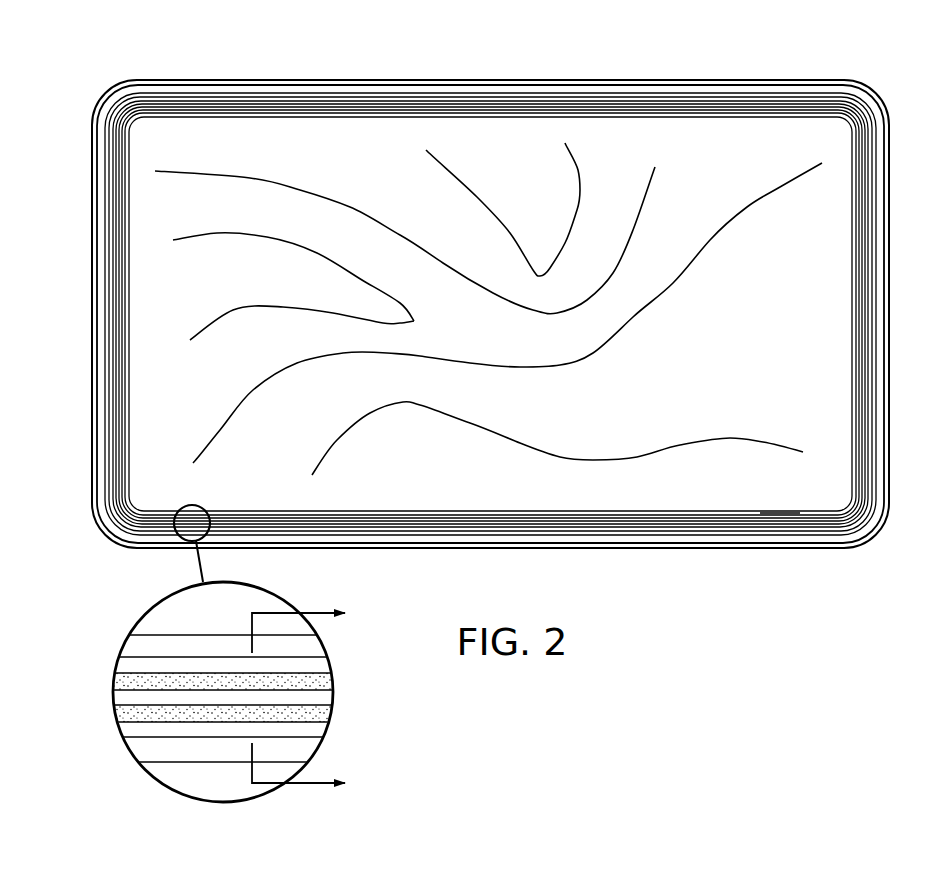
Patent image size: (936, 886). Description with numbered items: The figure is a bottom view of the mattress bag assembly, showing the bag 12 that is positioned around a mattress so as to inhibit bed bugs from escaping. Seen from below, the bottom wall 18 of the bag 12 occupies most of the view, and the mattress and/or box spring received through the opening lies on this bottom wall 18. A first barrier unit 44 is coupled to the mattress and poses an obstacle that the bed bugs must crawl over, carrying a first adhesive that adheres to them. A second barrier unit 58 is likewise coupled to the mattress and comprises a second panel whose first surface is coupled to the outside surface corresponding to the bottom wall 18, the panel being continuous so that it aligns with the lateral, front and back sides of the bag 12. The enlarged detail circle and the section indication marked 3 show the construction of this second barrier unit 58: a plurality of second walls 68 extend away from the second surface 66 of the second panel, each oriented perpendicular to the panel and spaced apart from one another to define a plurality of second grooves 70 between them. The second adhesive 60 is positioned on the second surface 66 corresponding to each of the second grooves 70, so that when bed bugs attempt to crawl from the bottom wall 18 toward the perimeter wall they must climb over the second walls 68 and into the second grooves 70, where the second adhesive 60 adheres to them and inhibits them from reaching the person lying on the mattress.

The bag 12 is at (727, 80).
The bottom wall 18 is at (630, 140).
The first barrier unit 44 is at (857, 544).
The second barrier unit 58 is at (793, 511).
The second adhesive 60 is at (317, 682).
The second surface 66 is at (173, 648).
The second walls 68 is at (140, 664).
The second grooves 70 is at (230, 686).
The section line 3- 3 is at (311, 698).